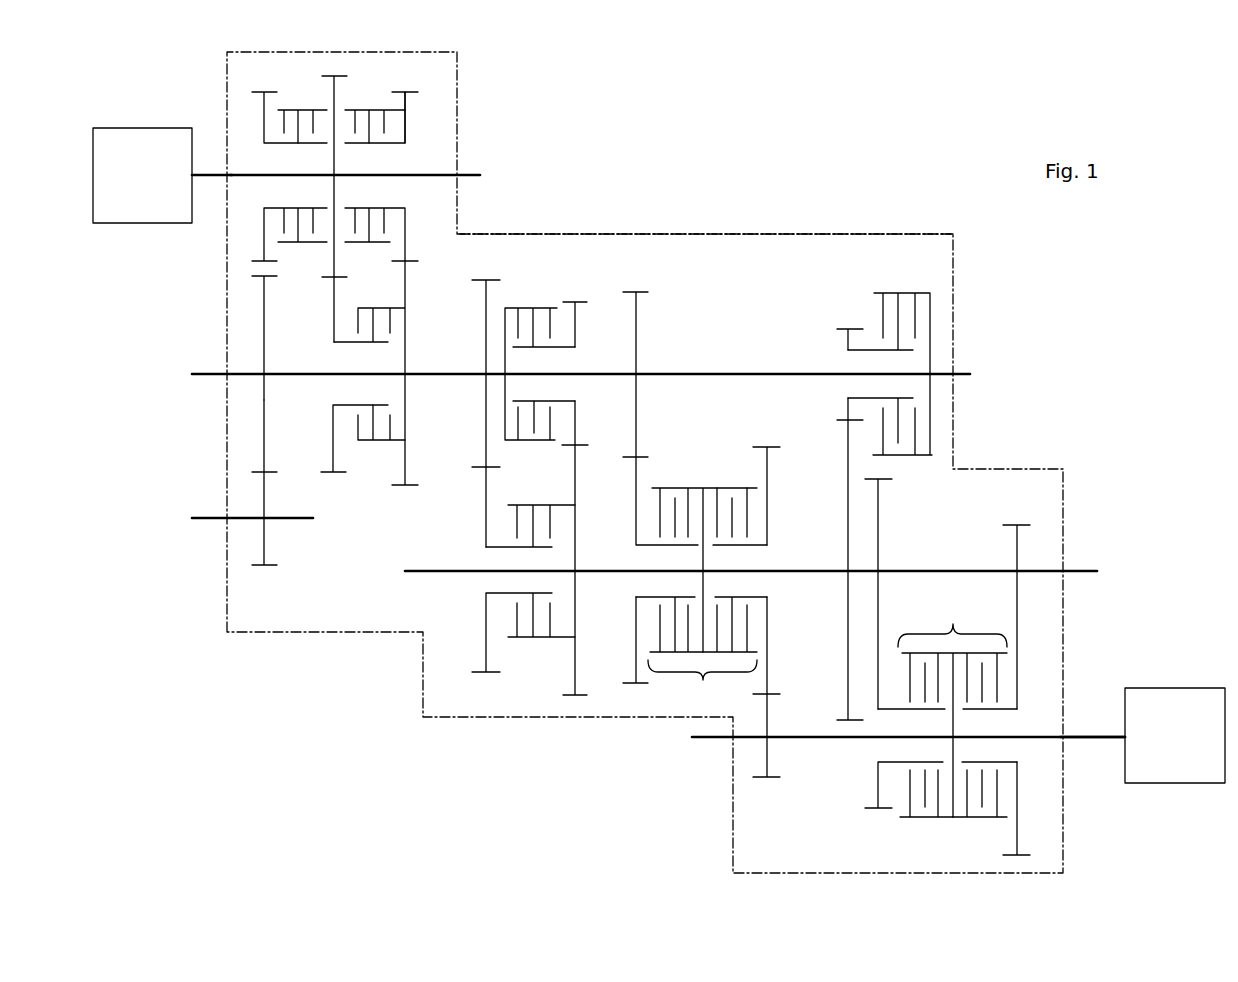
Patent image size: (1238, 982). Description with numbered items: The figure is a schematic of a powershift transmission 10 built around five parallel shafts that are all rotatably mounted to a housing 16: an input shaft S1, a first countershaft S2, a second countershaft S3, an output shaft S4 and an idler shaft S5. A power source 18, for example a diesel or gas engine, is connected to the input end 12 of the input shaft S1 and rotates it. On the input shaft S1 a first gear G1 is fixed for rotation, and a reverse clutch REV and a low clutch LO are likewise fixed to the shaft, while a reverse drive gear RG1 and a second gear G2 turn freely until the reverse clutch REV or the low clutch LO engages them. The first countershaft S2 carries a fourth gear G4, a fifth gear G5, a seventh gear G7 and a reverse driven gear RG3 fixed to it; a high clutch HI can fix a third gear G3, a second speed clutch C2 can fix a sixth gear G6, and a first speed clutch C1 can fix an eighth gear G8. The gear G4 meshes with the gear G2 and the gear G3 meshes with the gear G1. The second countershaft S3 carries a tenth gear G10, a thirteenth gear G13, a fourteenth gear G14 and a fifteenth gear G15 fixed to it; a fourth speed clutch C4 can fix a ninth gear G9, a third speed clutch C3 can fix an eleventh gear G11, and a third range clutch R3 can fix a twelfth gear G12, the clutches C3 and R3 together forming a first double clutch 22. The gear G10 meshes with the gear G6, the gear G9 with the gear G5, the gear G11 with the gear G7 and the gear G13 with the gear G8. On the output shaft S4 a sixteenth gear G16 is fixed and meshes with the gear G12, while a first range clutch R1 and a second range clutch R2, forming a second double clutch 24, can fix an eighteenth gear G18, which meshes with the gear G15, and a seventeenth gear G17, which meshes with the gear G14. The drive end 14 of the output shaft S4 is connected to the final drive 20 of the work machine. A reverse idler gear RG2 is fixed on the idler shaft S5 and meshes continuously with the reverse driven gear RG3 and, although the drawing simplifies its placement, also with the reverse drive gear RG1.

The powershift transmission 10 is at (766, 175).
The input end 12 is at (208, 177).
The drive end 14 is at (1087, 735).
The housing 16 is at (848, 233).
The power source 18 is at (112, 223).
The final drive 20 is at (1168, 784).
The first double clutch 22 is at (701, 655).
The second double clutch 24 is at (947, 707).
The input shaft S1 is at (470, 176).
The first countershaft S2 is at (962, 372).
The second countershaft S3 is at (1082, 569).
The output shaft S4 is at (707, 738).
The idler shaft S5 is at (200, 517).
The reverse drive gear RG1 is at (320, 98).
The reverse idler gear RG2 is at (263, 548).
The reverse driven gear RG3 is at (263, 313).
The reverse clutch REV is at (302, 108).
The low clutch LO is at (370, 110).
The high clutch HI is at (368, 442).
The first gear G1 is at (337, 76).
The second gear G2 is at (408, 112).
The third gear G3 is at (337, 473).
The fourth gear G4 is at (405, 472).
The fifth gear G5 is at (485, 327).
The sixth gear G6 is at (575, 328).
The seventh gear G7 is at (637, 318).
The eighth gear G8 is at (848, 340).
The ninth gear G9 is at (485, 642).
The tenth gear G10 is at (573, 670).
The eleventh gear G11 is at (635, 657).
The twelfth gear G12 is at (768, 447).
The thirteenth gear G13 is at (848, 650).
The fourteenth gear G14 is at (878, 520).
The fifteenth gear G15 is at (1017, 543).
The sixteenth gear G16 is at (768, 760).
The seventeenth gear G17 is at (878, 793).
The eighteenth gear G18 is at (1017, 835).
The first speed clutch C1 is at (908, 293).
The second speed clutch C2 is at (535, 308).
The third speed clutch C3 is at (682, 487).
The fourth speed clutch C4 is at (543, 507).
The first range clutch R1 is at (973, 820).
The second range clutch R2 is at (917, 820).
The third range clutch R3 is at (735, 487).